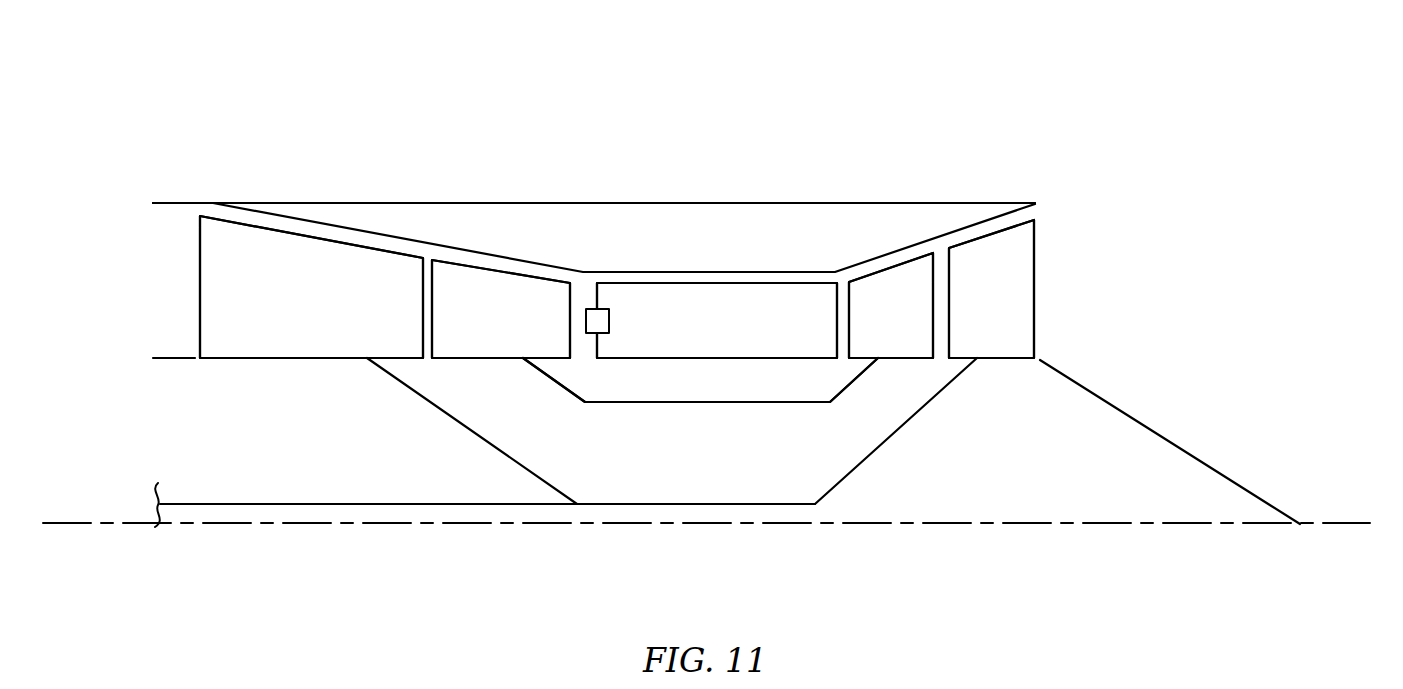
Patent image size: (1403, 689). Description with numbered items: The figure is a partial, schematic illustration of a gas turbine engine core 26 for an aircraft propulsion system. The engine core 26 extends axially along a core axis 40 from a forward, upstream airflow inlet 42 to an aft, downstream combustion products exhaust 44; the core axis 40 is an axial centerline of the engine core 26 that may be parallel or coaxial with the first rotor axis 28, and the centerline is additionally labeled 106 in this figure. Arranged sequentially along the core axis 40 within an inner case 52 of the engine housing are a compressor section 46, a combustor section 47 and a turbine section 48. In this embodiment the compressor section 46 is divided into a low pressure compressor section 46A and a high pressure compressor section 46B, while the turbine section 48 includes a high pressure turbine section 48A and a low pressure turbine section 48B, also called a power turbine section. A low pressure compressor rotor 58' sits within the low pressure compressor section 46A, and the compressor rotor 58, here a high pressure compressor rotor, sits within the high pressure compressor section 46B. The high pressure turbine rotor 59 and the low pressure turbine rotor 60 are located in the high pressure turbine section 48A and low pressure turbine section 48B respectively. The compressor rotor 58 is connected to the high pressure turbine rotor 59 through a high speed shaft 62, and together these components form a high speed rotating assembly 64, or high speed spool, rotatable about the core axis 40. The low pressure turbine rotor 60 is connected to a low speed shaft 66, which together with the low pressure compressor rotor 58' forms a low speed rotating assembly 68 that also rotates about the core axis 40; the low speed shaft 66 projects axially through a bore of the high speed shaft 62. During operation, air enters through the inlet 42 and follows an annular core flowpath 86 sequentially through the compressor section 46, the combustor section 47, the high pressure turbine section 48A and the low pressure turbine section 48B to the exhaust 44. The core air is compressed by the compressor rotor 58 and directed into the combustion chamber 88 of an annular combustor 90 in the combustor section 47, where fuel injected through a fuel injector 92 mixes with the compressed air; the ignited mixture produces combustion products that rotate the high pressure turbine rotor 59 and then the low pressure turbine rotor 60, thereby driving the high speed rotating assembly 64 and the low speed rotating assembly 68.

The engine core 26 is at (684, 123).
The first rotor axis 28 is at (723, 571).
The core axis 40 is at (723, 571).
The centerline axis 106 is at (1362, 524).
The airflow inlet 42 is at (153, 292).
The combustion products exhaust 44 is at (1057, 291).
The compressor section 46 is at (317, 138).
The low pressure compressor section 46A is at (322, 229).
The high pressure compressor section 46B is at (474, 249).
The combustor section 47 is at (709, 264).
The turbine section 48 is at (847, 137).
The high pressure turbine section 48A is at (894, 254).
The low pressure turbine section 48B is at (976, 230).
The inner case 52 is at (603, 196).
The low pressure compressor rotor 58' is at (311, 328).
The compressor rotor 58 is at (501, 346).
The high pressure turbine rotor 59 is at (900, 358).
The low pressure turbine rotor 60 is at (998, 358).
The high speed shaft 62 is at (720, 402).
The high speed rotating assembly 64 is at (638, 416).
The low speed shaft 66 is at (670, 504).
The low speed rotating assembly 68 is at (800, 516).
The core flowpath 86 is at (160, 252).
The combustion chamber 88 is at (779, 337).
The combustor 90 is at (648, 283).
The fuel injector 92 is at (609, 321).